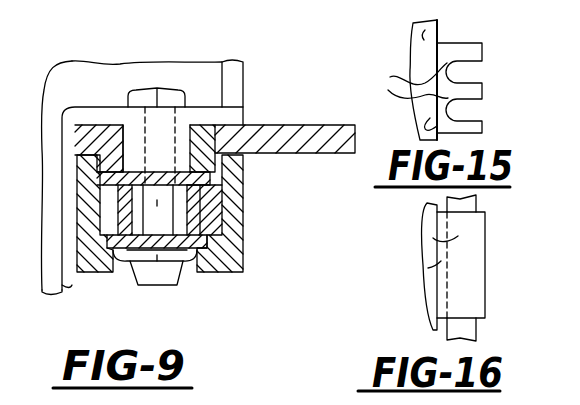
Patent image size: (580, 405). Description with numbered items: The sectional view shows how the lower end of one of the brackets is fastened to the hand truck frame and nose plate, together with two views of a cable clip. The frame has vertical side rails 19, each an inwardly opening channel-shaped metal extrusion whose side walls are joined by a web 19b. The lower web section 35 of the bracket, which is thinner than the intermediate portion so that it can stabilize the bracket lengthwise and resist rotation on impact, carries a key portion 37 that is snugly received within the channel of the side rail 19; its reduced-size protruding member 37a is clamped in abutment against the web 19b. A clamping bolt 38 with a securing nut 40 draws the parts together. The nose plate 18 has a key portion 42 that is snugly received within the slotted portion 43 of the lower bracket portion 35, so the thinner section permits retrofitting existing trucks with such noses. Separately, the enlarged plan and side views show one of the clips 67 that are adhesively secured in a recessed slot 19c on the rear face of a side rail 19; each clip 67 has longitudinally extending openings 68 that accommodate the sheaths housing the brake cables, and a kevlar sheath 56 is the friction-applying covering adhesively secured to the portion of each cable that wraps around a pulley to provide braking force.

In FIG. 9, the nose plate 18 is at (222, 88).
In FIG. 9, the side rail 19 is at (250, 257).
In FIG. 15, the side rail 19 is at (408, 58).
In FIG. 16, the side rail 19 is at (420, 303).
In FIG. 9, the web 19b is at (183, 273).
In FIG. 15, the recessed slot 19c is at (440, 25).
In FIG. 9, the lower web section 35 is at (283, 127).
In FIG. 9, the key portion 37 is at (211, 172).
In FIG. 9, the protruding member 37a is at (193, 207).
In FIG. 9, the clamping bolt 38 is at (208, 222).
In FIG. 9, the securing nut 40 is at (157, 273).
In FIG. 9, the key portion 42 is at (128, 132).
In FIG. 9, the slotted portion 43 is at (206, 172).
In FIG. 16, the kevlar sheath 56 is at (473, 327).
In FIG. 15, the clip 67 is at (455, 105).
In FIG. 16, the clip 67 is at (433, 238).
In FIG. 15, the opening 68 is at (401, 79).
In FIG. 16, the opening 68 is at (428, 268).